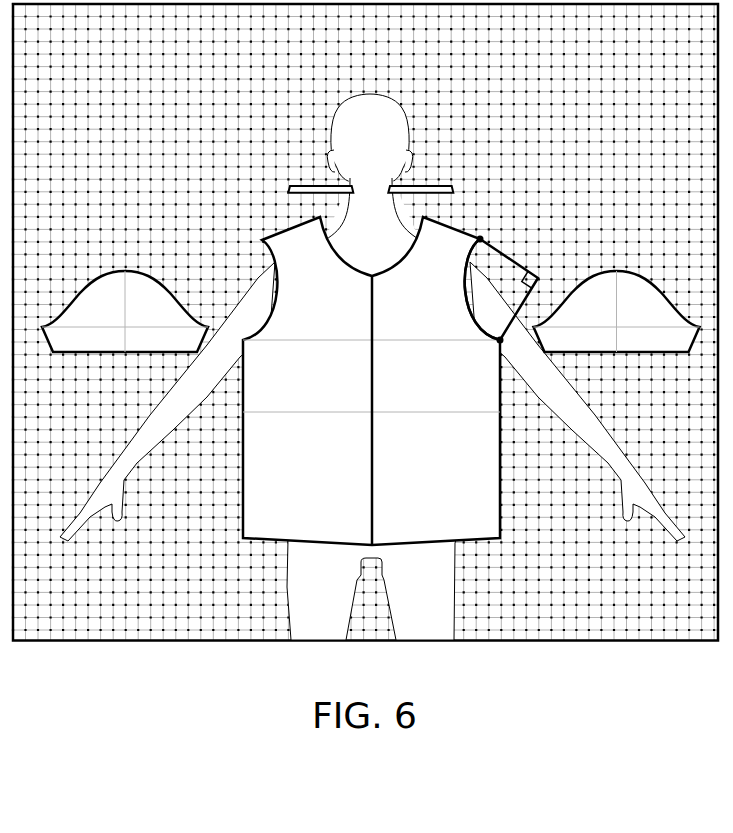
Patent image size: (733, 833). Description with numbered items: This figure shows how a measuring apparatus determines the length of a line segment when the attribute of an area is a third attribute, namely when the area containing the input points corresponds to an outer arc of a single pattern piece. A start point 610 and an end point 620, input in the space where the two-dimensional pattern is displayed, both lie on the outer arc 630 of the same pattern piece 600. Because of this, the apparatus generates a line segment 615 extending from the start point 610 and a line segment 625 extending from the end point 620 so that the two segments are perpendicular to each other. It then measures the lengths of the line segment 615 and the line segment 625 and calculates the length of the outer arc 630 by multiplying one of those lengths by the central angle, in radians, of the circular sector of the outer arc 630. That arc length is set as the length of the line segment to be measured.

The pattern piece 600 is at (449, 222).
The start point 610 is at (481, 238).
The line segment 615 is at (518, 265).
The end point 620 is at (500, 340).
The line segment 625 is at (538, 323).
The outer arc 630 is at (467, 290).